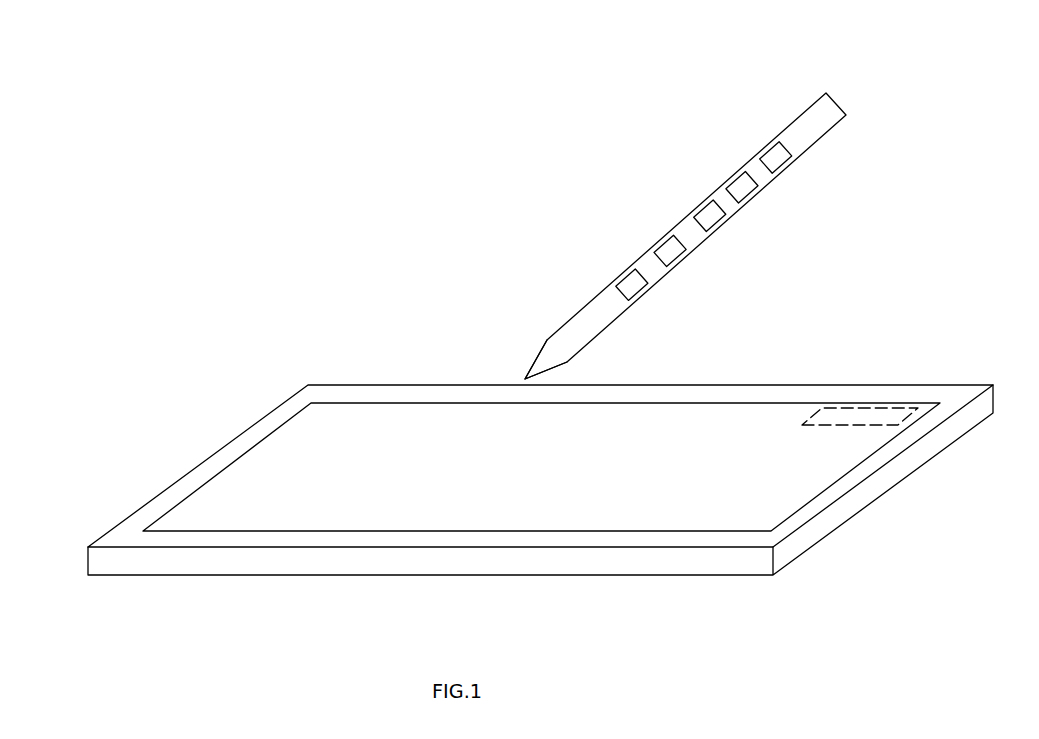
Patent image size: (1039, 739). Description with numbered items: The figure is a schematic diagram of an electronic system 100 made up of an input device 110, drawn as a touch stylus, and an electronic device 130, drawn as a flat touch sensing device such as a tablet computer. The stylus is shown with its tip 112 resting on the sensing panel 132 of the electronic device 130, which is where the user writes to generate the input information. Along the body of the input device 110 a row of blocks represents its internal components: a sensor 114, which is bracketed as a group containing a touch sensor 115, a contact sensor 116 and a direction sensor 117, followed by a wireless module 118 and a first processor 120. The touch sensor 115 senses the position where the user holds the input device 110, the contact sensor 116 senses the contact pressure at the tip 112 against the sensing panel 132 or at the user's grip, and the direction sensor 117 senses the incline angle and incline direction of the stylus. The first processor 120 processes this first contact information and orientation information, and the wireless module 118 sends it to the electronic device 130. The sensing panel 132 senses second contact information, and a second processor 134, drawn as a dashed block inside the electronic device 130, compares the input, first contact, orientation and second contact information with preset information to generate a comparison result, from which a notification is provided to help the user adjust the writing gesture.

The electronic system 100 is at (125, 108).
The input device 110 is at (817, 105).
The tip 112 is at (524, 378).
The sensor 114 is at (655, 168).
The touch sensor 115 is at (628, 280).
The contact sensor 116 is at (672, 240).
The direction sensor 117 is at (703, 207).
The wireless module 118 is at (738, 177).
The first processor 120 is at (770, 152).
The electronic device 130 is at (303, 387).
The sensing panel 132 is at (267, 452).
The second processor 134 is at (866, 410).